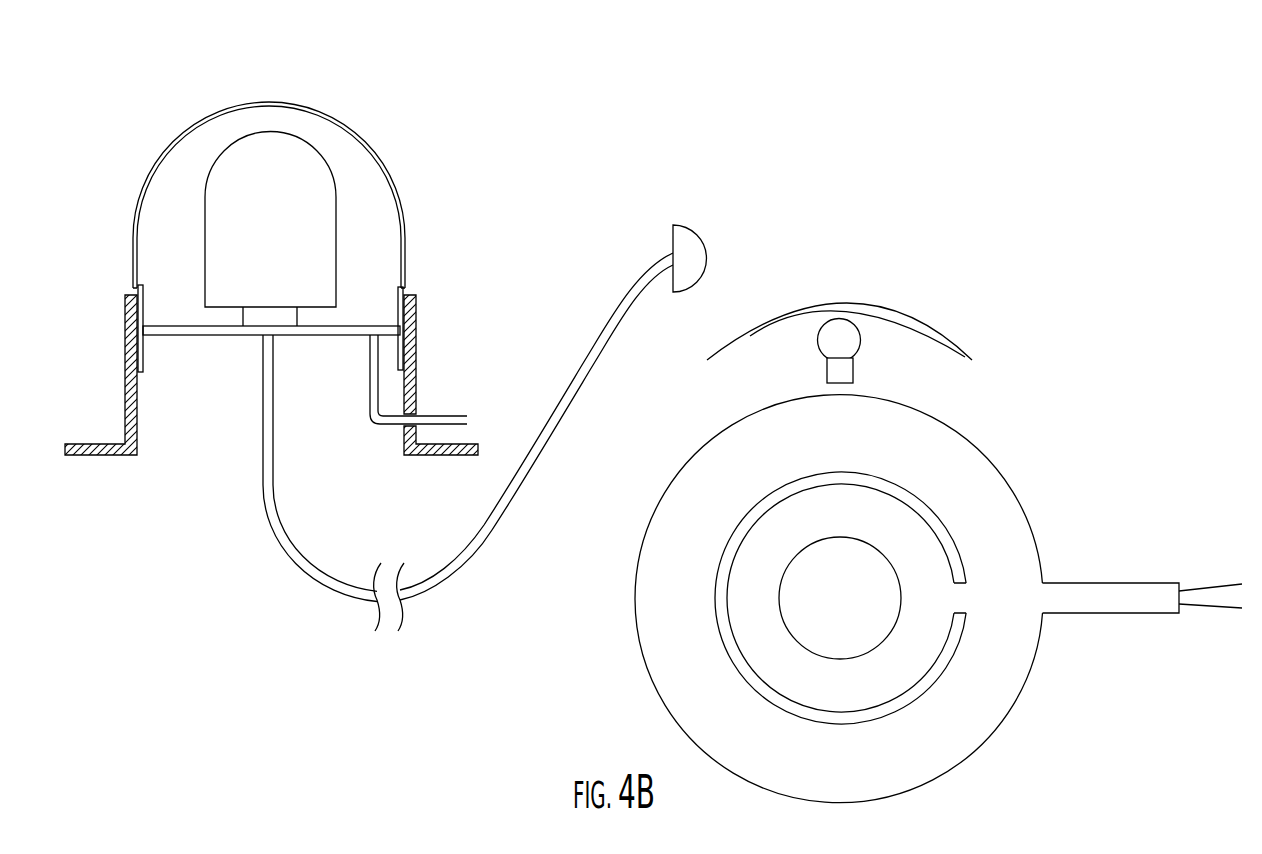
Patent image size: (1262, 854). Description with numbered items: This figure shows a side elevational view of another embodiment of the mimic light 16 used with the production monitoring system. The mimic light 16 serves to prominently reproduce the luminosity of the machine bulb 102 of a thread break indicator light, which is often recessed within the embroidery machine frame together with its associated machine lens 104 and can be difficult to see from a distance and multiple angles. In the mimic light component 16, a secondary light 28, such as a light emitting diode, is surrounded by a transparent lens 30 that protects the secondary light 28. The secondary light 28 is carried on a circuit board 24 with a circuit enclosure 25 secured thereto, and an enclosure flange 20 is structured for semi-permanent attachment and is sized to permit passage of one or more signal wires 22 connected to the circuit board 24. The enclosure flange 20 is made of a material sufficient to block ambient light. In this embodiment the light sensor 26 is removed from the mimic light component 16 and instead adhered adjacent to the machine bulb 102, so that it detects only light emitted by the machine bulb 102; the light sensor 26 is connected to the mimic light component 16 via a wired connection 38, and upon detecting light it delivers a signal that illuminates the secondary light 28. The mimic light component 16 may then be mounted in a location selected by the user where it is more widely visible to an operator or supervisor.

The mimic light 16 is at (167, 98).
The transparent lens 30 is at (367, 137).
The secondary light 28 is at (338, 210).
The circuit board 24 is at (170, 327).
The circuit enclosure 25 is at (418, 305).
The enclosure flange 20 is at (433, 452).
The signal wires 22 is at (441, 414).
The cable 38 is at (263, 483).
The light sensor 26 is at (673, 225).
The machine bulb 102 is at (820, 349).
The machine lens 104 is at (750, 336).